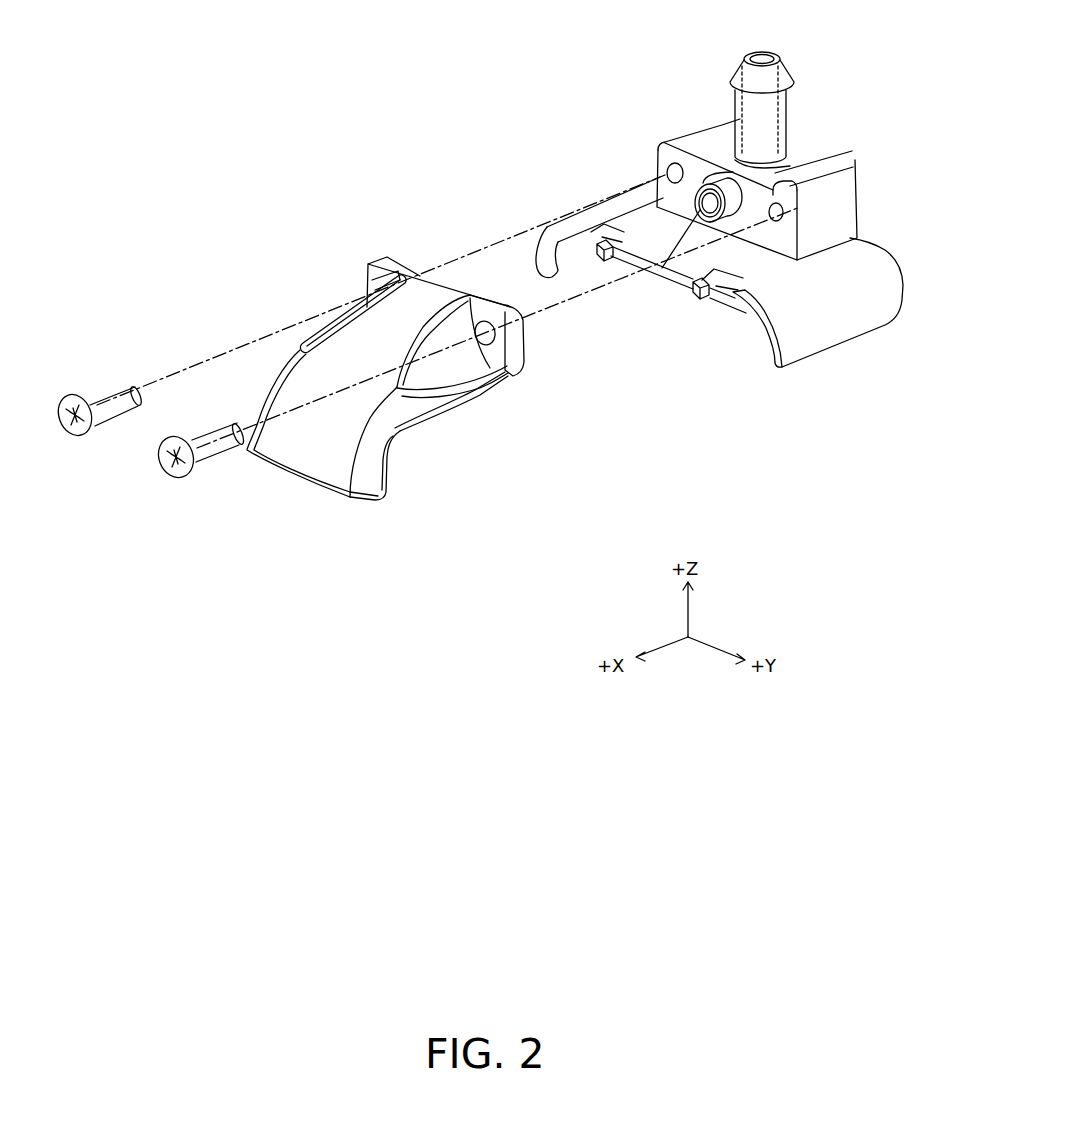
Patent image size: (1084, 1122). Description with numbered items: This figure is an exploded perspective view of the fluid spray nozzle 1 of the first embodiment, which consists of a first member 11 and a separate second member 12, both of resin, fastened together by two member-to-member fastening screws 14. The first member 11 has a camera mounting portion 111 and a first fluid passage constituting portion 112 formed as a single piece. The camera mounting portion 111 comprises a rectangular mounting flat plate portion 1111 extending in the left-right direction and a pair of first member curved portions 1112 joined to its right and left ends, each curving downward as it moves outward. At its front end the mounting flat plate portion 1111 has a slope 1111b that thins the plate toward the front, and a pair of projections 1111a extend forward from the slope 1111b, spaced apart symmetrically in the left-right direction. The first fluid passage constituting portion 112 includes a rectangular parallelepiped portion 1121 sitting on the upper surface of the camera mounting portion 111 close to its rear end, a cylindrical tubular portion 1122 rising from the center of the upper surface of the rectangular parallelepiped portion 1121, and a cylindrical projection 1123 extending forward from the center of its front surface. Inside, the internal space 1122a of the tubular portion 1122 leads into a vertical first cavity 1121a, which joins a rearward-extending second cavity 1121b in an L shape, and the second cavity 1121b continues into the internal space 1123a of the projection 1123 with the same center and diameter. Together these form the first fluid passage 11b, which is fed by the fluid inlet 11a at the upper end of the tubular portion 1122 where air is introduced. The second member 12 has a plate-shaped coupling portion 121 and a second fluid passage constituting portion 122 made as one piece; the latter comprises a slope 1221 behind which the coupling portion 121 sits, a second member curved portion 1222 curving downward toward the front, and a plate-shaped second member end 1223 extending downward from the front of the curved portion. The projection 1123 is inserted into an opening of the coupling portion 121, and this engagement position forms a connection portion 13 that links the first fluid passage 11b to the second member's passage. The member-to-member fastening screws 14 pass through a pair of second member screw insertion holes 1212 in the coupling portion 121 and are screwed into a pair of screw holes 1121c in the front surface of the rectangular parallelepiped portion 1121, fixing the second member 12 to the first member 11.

The fluid spray nozzle 1 is at (262, 81).
The first member 11 is at (818, 401).
The fluid inlet 11a is at (766, 50).
The first fluid passage 11b is at (840, 173).
The second member 12 is at (397, 514).
The connection portion 13 is at (718, 200).
The member-to-member fastening screws 14 is at (180, 479).
The camera mounting portion 111 is at (753, 330).
The first fluid passage constituting portion 112 is at (687, 103).
The coupling portion 121 is at (514, 354).
The second fluid passage constituting portion 122 is at (270, 358).
The mounting flat plate portion 1111 is at (677, 228).
The projections 1111a is at (699, 290).
The slope 1111b is at (760, 264).
The first member curved portions 1112 is at (547, 223).
The rectangular parallelepiped portion 1121 is at (837, 230).
The first cavity 1121a is at (810, 167).
The second cavity 1121b is at (735, 160).
The screw holes 1121c is at (667, 168).
The tubular portion 1122 is at (788, 102).
The internal space of the tubular portion 1122a is at (785, 135).
The projection 1123 is at (699, 182).
The internal space of the projection 1123a is at (607, 260).
The second member screw insertion holes 1212 is at (467, 296).
The slope 1221 is at (347, 355).
The second member curved portion 1222 is at (382, 443).
The second member end 1223 is at (298, 457).